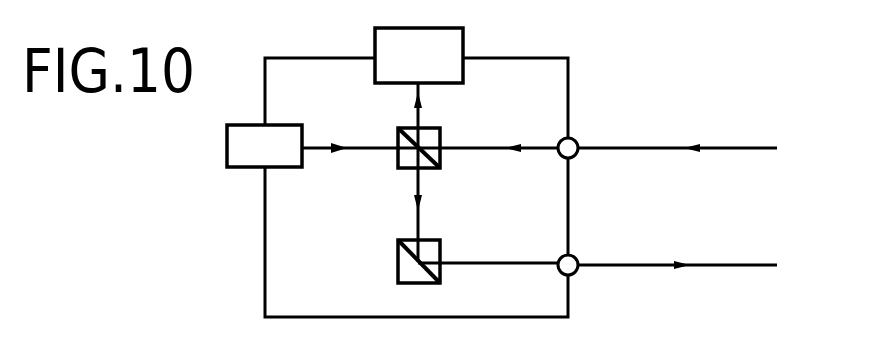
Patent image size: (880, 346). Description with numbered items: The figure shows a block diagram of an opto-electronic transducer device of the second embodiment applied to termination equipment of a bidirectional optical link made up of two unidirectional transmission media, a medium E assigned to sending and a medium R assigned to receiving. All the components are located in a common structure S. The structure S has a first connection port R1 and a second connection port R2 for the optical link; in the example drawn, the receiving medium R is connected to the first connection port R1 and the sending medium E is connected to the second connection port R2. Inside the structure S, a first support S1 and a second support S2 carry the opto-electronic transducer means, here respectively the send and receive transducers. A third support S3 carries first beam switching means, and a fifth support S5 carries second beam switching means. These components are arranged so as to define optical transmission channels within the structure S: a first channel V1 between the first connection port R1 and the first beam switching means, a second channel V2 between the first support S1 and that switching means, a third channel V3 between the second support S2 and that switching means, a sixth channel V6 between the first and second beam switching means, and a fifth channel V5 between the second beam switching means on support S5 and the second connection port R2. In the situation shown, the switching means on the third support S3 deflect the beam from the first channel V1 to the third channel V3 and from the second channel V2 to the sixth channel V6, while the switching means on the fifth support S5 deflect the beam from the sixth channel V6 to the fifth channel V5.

The common structure S is at (569, 100).
The first support S1 is at (227, 141).
The second support S2 is at (463, 42).
The third support S3 is at (397, 165).
The fifth support S5 is at (397, 276).
The first optical transmission channel V1 is at (481, 150).
The second optical transmission channel V2 is at (361, 147).
The third optical transmission channel V3 is at (420, 112).
The fifth optical transmission channel V5 is at (480, 265).
The sixth optical transmission channel V6 is at (417, 219).
The first connection port R1 is at (576, 158).
The second connection port R2 is at (576, 275).
The unidirectional transmission medium assigned to receiving R is at (729, 147).
The unidirectional transmission medium assigned to sending E is at (718, 264).